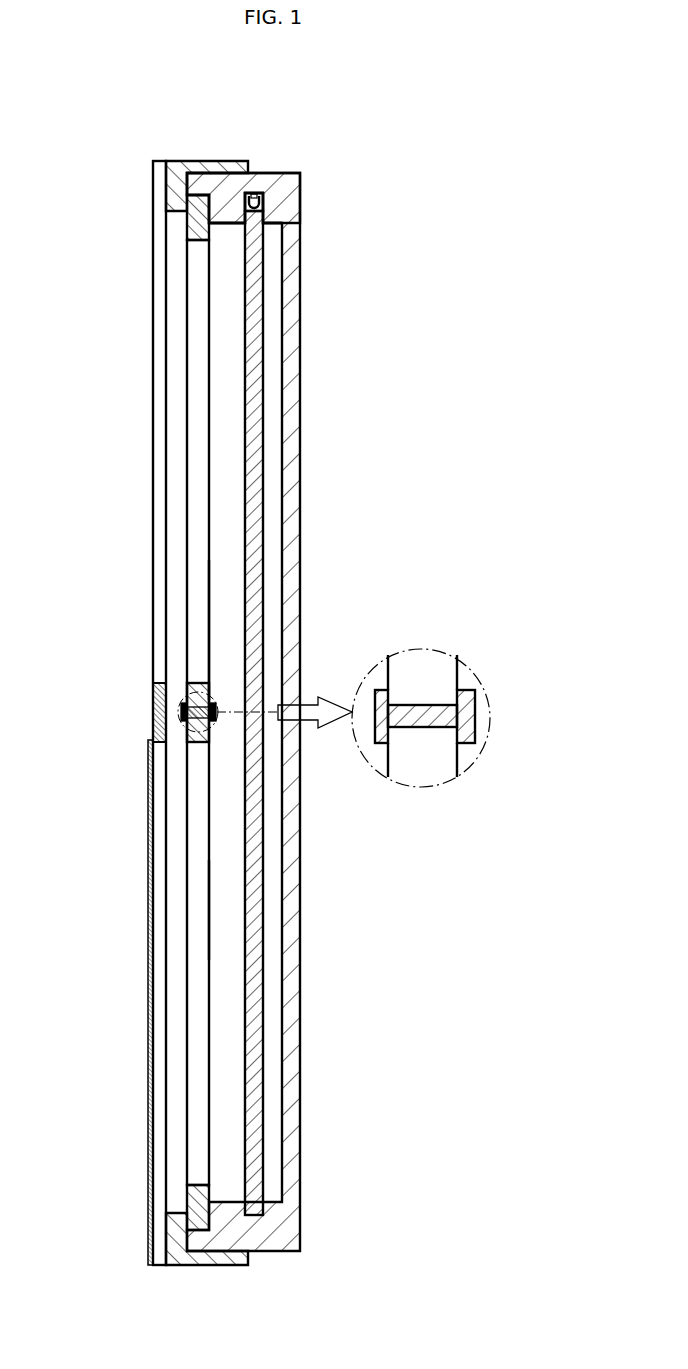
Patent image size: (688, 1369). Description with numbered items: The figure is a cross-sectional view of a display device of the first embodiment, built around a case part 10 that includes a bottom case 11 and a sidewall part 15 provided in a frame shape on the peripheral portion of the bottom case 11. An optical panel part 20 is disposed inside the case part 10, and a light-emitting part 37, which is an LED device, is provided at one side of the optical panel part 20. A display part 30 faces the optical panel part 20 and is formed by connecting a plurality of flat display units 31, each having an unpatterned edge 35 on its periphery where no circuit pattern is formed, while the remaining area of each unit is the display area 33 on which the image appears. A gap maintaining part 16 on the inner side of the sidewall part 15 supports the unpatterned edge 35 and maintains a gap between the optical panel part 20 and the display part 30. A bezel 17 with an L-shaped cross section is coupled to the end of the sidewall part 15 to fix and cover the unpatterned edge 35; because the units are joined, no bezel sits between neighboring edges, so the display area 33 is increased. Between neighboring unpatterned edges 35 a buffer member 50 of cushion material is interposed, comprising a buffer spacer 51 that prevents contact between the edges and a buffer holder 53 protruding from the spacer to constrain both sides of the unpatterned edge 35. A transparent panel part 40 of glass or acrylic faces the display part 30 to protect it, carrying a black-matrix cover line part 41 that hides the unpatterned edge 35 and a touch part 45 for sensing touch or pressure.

The case part 10 is at (281, 670).
The bottom case 11 is at (293, 498).
The sidewall part 15 is at (270, 183).
The gap maintaining part 16 is at (228, 224).
The bezel 17 is at (180, 168).
The optical panel part 20 is at (255, 1070).
The display part 30 is at (244, 712).
The display unit 31 is at (214, 624).
The display area 33 is at (188, 927).
The unpatterned edge 35 is at (186, 728).
The light-emitting part 37 is at (264, 199).
The transparent panel part 40 is at (141, 676).
The cover line part 41 is at (152, 725).
The touch part 45 is at (148, 827).
The buffer member 50 is at (281, 693).
The buffer spacer 51 is at (428, 712).
The buffer holder 53 is at (468, 690).